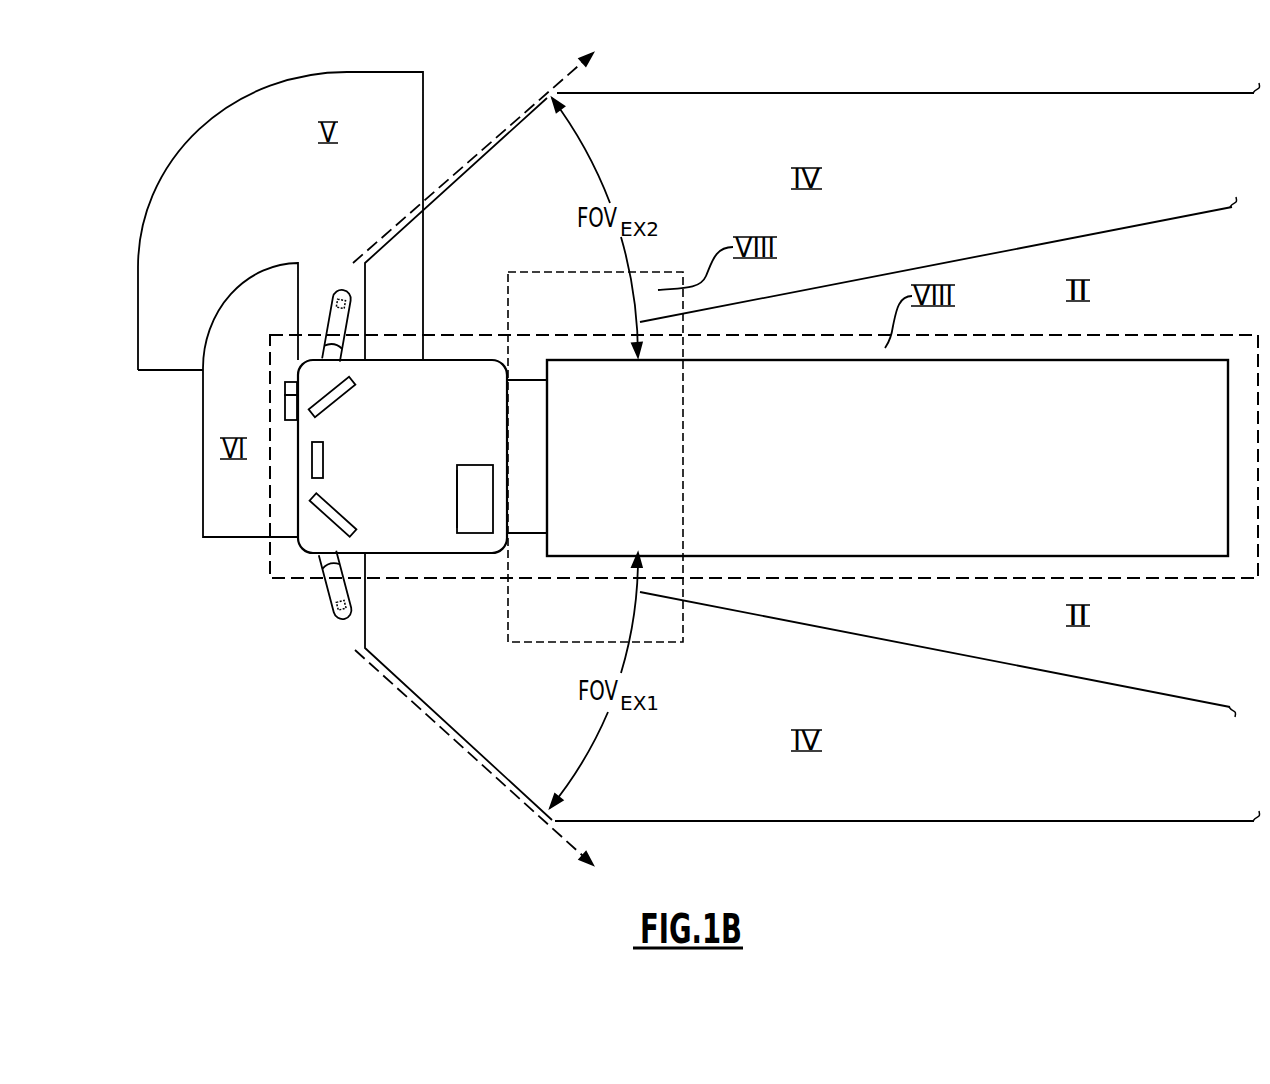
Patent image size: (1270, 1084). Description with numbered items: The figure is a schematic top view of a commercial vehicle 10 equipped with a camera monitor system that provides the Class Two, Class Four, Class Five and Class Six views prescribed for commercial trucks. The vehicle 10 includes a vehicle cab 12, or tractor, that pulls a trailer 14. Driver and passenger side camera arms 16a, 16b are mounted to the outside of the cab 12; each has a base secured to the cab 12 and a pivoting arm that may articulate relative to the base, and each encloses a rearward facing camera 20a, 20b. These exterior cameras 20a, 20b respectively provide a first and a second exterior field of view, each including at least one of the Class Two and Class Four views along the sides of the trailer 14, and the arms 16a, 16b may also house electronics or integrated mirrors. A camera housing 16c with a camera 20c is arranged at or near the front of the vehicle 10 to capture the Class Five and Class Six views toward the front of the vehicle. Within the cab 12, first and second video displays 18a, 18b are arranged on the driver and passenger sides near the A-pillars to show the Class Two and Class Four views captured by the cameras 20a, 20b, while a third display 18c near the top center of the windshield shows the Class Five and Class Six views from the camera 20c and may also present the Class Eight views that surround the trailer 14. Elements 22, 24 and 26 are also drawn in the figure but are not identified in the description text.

The commercial vehicle 10 is at (278, 353).
The vehicle cab 12 is at (290, 551).
The trailer 14 is at (1140, 356).
The driver side camera arm 16a is at (330, 600).
The passenger side camera arm 16b is at (326, 316).
The camera housing 16c is at (285, 407).
The first video display 18a is at (344, 516).
The second video display 18b is at (345, 397).
The third display 18c is at (312, 460).
The rearward facing camera 20a is at (350, 608).
The rearward facing camera 20b is at (350, 307).
The front camera 20c is at (285, 388).
The housing interior 22 is at (448, 383).
The controller 24 is at (440, 489).
The processor 26 is at (475, 473).